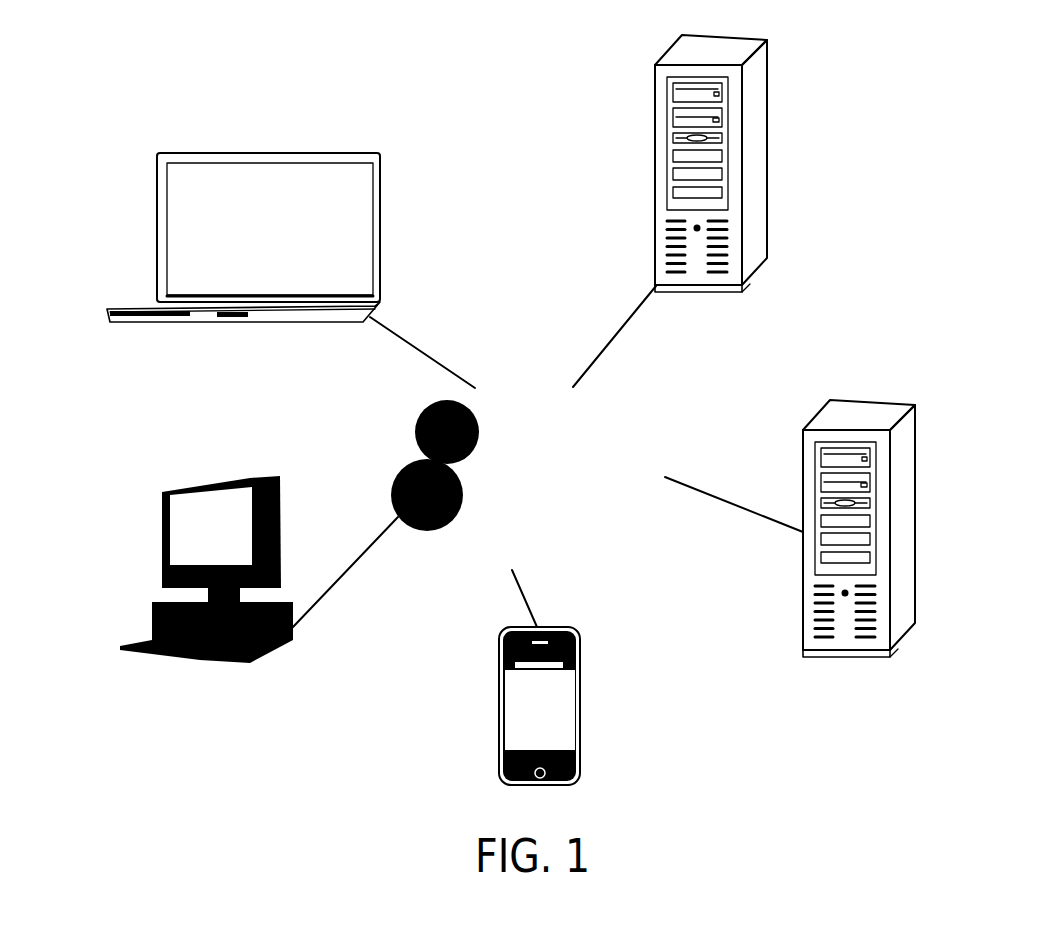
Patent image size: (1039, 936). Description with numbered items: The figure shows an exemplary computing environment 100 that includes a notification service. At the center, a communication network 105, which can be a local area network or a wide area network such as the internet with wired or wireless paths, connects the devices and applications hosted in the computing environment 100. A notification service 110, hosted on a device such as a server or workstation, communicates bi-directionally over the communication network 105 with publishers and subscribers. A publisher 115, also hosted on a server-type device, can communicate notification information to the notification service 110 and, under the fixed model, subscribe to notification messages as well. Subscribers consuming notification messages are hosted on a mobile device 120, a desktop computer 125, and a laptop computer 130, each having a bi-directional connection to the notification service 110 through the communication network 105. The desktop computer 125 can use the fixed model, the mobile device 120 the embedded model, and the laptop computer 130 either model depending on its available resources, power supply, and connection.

The computing environment 100 is at (509, 148).
The communication network 105 is at (637, 423).
The notification service 110 is at (767, 68).
The publisher 115 is at (913, 455).
The mobile device 120 is at (498, 653).
The desktop computer 125 is at (162, 512).
The laptop computer 130 is at (155, 182).